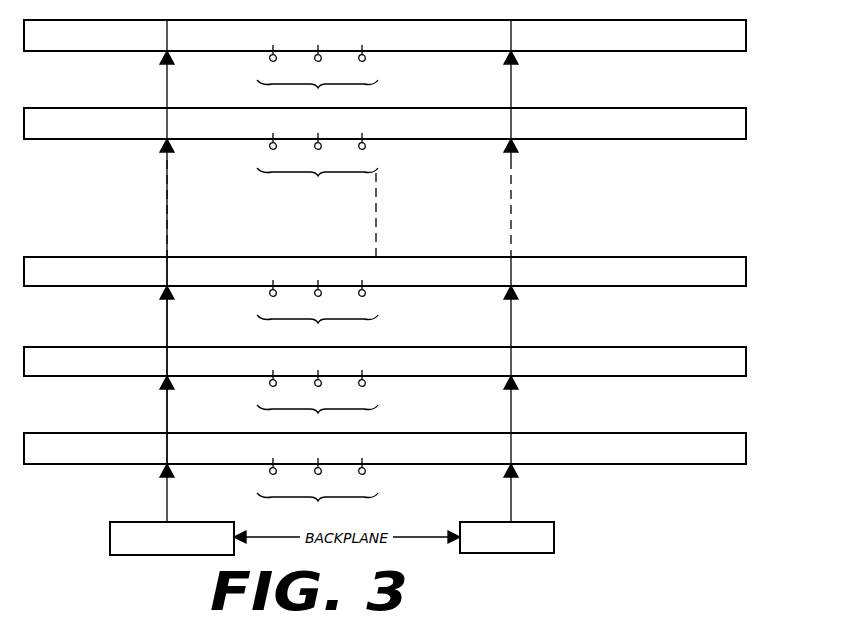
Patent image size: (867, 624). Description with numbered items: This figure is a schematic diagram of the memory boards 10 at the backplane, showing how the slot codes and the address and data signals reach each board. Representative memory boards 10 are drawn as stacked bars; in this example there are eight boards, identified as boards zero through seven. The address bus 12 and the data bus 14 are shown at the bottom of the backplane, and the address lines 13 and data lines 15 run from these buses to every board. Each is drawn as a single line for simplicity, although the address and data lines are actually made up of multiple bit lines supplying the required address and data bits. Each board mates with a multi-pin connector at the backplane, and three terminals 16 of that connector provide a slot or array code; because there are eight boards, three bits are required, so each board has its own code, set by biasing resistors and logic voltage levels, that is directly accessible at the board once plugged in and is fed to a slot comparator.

The memory array board 10 is at (128, 38).
The address bus 12 is at (137, 520).
The address lines 13 is at (168, 323).
The data bus 14 is at (527, 520).
The data lines 15 is at (513, 318).
The slot or array code terminals 16 is at (380, 63).